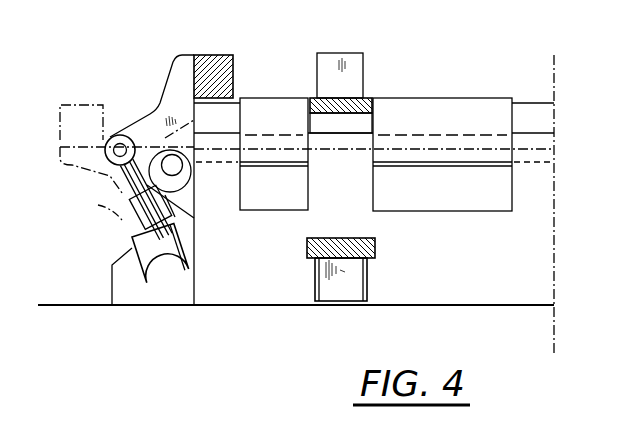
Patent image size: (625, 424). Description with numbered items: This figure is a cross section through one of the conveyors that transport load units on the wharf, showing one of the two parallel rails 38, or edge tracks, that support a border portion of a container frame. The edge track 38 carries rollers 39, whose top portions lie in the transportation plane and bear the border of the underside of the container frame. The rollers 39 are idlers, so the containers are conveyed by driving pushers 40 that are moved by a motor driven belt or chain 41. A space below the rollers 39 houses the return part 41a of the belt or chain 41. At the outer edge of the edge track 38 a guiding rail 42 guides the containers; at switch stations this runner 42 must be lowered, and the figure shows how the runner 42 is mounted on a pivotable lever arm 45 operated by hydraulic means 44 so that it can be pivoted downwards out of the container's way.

The rail 38 is at (470, 68).
The rollers 39 is at (260, 106).
The driving pusher 40 is at (327, 62).
The belt or chain 41 is at (348, 100).
The return part 41a is at (377, 258).
The guiding rail 42 is at (203, 54).
The hydraulic means 44 is at (133, 228).
The pivotable lever arm 45 is at (173, 97).